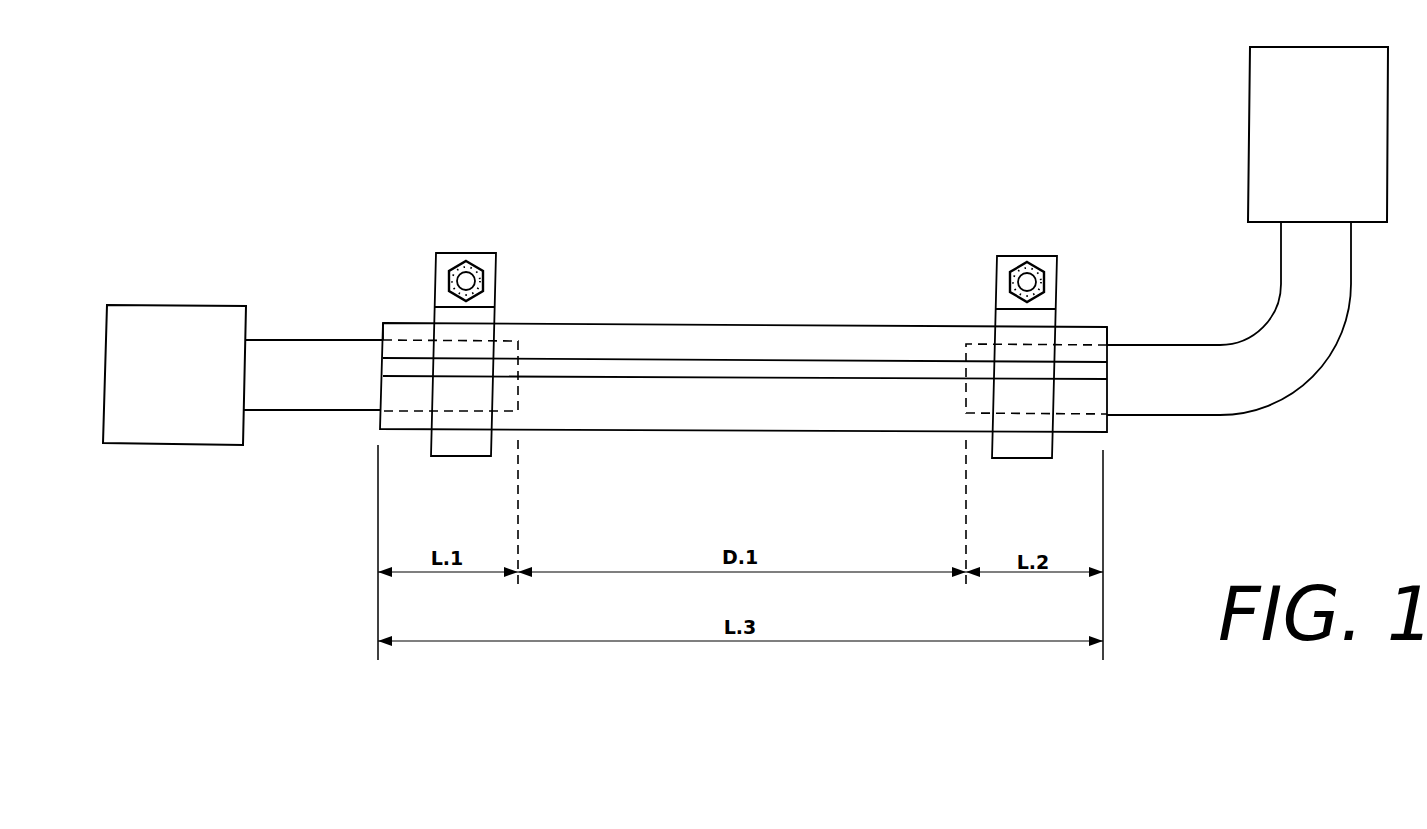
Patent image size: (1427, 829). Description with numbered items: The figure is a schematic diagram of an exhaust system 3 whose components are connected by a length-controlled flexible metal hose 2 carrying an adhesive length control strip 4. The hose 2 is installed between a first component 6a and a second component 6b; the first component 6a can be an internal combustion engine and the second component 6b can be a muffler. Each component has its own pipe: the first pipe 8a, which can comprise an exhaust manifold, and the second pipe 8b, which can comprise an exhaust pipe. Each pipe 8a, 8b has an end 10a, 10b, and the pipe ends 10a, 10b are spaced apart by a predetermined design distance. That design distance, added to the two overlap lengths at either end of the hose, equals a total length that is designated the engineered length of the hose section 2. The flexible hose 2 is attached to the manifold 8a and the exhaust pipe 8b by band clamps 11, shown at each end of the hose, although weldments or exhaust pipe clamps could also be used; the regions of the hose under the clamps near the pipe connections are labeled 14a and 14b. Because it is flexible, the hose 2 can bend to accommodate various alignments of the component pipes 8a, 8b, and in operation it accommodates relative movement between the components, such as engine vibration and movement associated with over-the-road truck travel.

The flexible hose 2 is at (850, 252).
The exhaust system 3 is at (266, 258).
The adhesive length control strip 4 is at (543, 379).
The first component 6a is at (214, 334).
The second component 6b is at (1284, 75).
The first pipe 8a is at (310, 411).
The second pipe 8b is at (1147, 416).
The pipe end 10a is at (518, 397).
The pipe end 10b is at (962, 389).
The band clamps 11 is at (488, 253).
The sleeve end 14a is at (383, 331).
The sleeve end 14b is at (1110, 353).